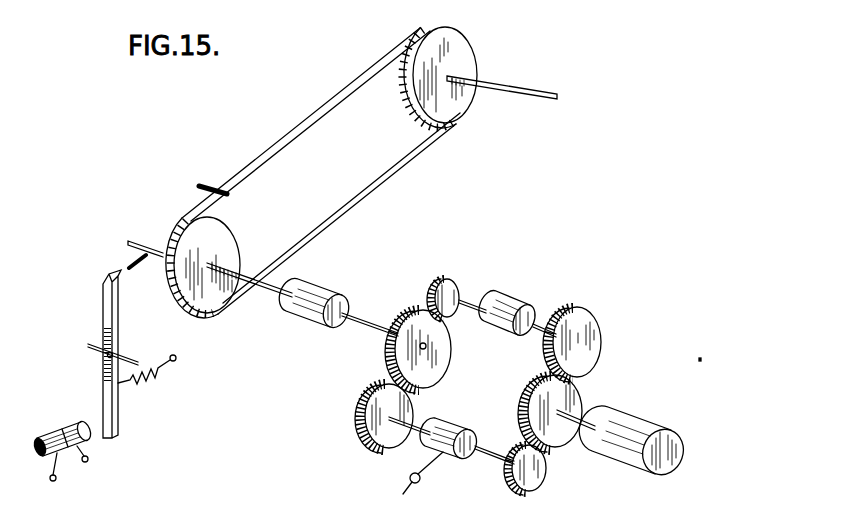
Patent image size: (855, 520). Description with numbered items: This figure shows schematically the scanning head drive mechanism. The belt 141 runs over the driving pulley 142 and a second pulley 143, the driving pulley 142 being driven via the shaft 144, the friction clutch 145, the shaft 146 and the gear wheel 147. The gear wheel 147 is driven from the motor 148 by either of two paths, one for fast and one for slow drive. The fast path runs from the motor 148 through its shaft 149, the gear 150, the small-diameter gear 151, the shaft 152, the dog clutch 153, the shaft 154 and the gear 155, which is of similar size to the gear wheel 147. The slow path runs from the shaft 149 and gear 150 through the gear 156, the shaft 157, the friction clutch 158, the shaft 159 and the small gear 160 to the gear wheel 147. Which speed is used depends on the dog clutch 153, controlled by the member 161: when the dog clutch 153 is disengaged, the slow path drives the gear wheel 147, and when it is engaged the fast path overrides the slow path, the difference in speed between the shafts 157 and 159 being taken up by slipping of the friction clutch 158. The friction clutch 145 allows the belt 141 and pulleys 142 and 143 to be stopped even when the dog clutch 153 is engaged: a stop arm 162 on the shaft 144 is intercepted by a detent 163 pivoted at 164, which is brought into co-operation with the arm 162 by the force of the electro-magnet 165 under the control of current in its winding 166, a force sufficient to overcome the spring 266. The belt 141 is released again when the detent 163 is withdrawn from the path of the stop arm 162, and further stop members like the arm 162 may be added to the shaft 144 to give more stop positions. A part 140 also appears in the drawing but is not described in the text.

The pin 140 is at (226, 176).
The belt 141 is at (365, 80).
The driving pulley 142 is at (211, 299).
The pulley 143 is at (458, 72).
The shaft 144 is at (146, 246).
The friction clutch 145 is at (315, 299).
The shaft 146 is at (368, 327).
The gear wheel 147 is at (432, 352).
The motor 148 is at (630, 448).
The shaft 149 is at (588, 422).
The gear 150 is at (532, 392).
The gear 151 is at (545, 458).
The shaft 152 is at (490, 456).
The dog clutch 153 is at (460, 432).
The shaft 154 is at (413, 423).
The gear 155 is at (353, 423).
The gear 156 is at (593, 331).
The shaft 157 is at (551, 327).
The friction clutch 158 is at (503, 311).
The shaft 159 is at (456, 311).
The gear 160 is at (457, 288).
The member 161 is at (403, 492).
The stop arm 162 is at (131, 259).
The detent 163 is at (107, 306).
The pivot 164 is at (88, 345).
The electro-magnet 165 is at (55, 437).
The winding 166 is at (86, 462).
The spring 266 is at (146, 378).